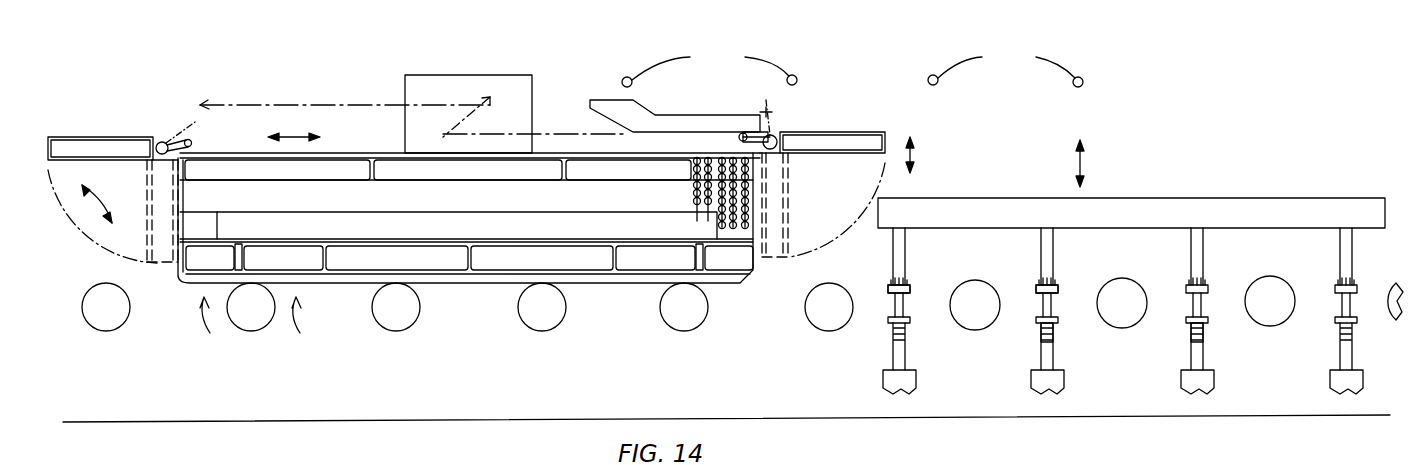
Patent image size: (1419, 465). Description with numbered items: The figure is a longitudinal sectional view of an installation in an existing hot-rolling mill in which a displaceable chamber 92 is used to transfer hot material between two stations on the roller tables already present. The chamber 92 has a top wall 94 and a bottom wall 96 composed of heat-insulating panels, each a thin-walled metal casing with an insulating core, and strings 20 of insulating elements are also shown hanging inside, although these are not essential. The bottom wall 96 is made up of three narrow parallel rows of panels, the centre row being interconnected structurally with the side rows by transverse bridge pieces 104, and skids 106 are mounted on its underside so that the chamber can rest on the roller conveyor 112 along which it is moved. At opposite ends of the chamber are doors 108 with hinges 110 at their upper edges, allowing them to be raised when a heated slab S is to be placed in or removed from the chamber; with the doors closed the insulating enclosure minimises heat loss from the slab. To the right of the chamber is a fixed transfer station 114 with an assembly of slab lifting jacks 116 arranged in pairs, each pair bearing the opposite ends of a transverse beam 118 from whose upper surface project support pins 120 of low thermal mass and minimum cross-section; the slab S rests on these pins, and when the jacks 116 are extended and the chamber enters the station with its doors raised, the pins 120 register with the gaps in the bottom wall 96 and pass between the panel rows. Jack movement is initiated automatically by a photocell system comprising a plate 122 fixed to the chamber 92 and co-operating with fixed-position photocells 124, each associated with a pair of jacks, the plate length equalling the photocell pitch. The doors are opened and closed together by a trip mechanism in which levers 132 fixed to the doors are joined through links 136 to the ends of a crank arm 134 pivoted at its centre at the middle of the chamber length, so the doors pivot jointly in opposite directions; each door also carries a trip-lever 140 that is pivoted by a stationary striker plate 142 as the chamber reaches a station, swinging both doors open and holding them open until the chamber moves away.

The strings of insulating elements 20 is at (750, 203).
The displaceable chamber 92 is at (190, 347).
The top wall 94 is at (242, 170).
The bottom wall 96 is at (560, 260).
The transverse bridge pieces 104 is at (232, 252).
The skids 106 is at (438, 283).
The doors 108 is at (97, 137).
The hinges 110 is at (160, 141).
The roller conveyor 112 is at (383, 330).
The fixed transfer station 114 is at (1258, 400).
The slab lifting jacks 116 is at (1193, 352).
The transverse beam 118 is at (1040, 308).
The support pins 120 is at (1338, 255).
The plate 122 is at (420, 78).
The photocells 124 is at (852, 67).
The levers 132 is at (190, 122).
The crank arm 134 is at (490, 97).
The links 136 is at (303, 105).
The trip-lever 140 is at (782, 166).
The striker plates 142 is at (640, 105).
The heated slab S is at (1128, 200).